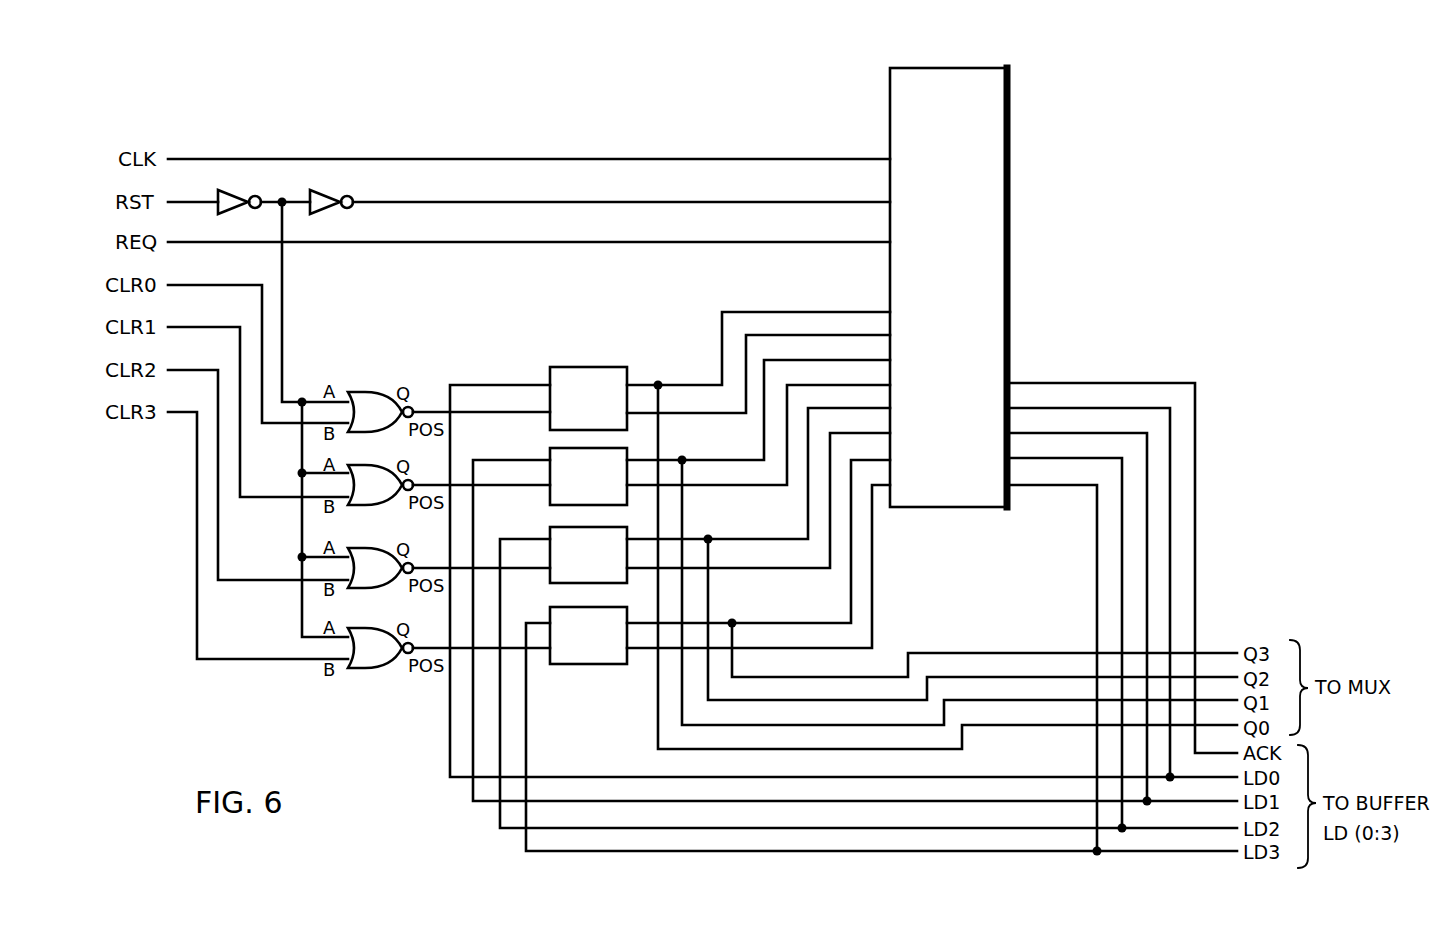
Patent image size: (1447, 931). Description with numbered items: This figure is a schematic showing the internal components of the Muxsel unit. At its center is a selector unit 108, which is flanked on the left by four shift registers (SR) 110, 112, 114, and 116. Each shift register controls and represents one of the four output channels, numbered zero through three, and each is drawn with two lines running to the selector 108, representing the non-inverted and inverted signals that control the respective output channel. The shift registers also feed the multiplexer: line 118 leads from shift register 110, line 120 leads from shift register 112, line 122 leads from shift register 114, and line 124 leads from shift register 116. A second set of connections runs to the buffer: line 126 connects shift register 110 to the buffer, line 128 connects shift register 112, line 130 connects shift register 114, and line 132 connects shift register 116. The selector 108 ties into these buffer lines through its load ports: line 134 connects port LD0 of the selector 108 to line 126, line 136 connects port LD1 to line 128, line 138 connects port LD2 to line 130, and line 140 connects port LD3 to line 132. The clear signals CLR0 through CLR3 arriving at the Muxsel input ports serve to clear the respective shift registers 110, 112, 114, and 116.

The selector unit 108 is at (992, 125).
The shift register 110 is at (597, 367).
The shift register 112 is at (624, 448).
The shift register 114 is at (615, 527).
The shift register 116 is at (567, 664).
The line 118 is at (1088, 725).
The line 120 is at (1018, 700).
The line 122 is at (975, 677).
The line 124 is at (908, 653).
The line 126 is at (537, 776).
The line 128 is at (590, 800).
The line 130 is at (663, 828).
The line 132 is at (735, 851).
The line 134 is at (1170, 437).
The line 136 is at (1147, 478).
The line 138 is at (1122, 517).
The line 140 is at (1097, 557).